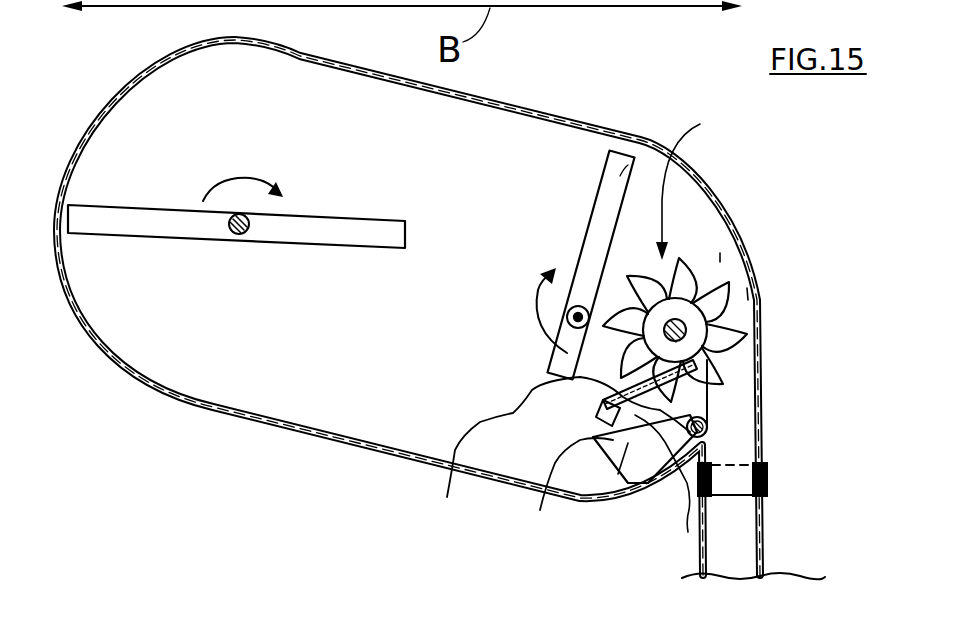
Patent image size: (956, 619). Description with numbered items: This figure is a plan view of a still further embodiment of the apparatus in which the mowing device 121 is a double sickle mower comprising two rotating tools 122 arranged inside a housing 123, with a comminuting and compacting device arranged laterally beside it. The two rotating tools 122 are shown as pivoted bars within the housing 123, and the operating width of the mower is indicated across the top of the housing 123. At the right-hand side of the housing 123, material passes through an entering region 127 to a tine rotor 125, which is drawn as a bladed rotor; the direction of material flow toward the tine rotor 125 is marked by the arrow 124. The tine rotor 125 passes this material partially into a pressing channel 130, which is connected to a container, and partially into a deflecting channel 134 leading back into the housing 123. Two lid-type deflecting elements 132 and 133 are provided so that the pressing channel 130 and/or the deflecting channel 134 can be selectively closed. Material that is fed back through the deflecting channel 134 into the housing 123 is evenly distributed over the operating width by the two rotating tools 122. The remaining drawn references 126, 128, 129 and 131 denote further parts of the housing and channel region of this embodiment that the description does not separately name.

The mowing device 121 is at (172, 406).
The rotating tools 122 is at (156, 226).
The housing 123 is at (500, 100).
The flow direction arrow 124 is at (695, 174).
The tine rotor 125 is at (680, 258).
The inner wall 126 is at (747, 295).
The entering region 127 is at (720, 258).
The side wall 128 is at (758, 306).
The collecting bag 129 is at (540, 508).
The pressing channel 130 is at (745, 476).
The guide wall 131 is at (746, 330).
The lid-type deflecting element 132 is at (708, 403).
The lid-type deflecting element 133 is at (710, 425).
The deflecting channel 134 is at (613, 507).